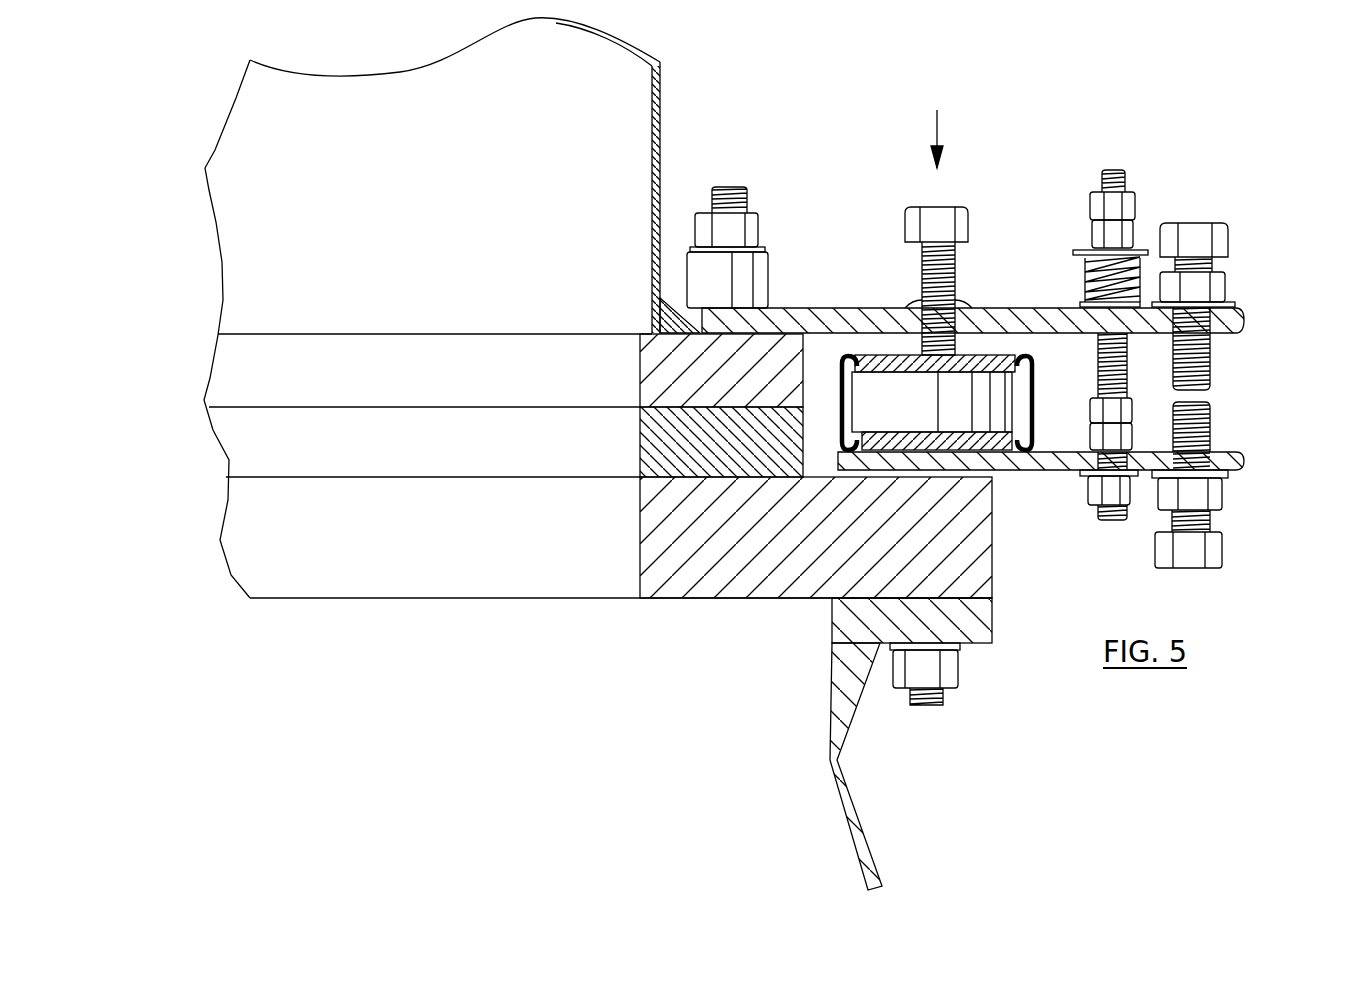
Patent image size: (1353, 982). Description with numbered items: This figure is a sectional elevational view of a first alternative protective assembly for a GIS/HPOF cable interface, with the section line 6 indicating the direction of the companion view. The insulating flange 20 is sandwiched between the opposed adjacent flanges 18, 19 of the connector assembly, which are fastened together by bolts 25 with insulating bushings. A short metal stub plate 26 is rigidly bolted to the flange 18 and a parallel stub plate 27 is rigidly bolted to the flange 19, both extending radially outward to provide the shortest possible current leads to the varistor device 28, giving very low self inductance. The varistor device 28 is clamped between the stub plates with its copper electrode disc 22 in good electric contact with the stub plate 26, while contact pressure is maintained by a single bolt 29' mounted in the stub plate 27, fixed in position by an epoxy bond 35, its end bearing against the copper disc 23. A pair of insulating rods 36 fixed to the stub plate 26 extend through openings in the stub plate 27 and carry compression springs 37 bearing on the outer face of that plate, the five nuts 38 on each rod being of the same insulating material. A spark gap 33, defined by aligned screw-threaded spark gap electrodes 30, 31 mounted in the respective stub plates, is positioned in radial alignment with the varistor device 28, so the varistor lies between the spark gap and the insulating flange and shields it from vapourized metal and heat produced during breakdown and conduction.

The section line 6 is at (938, 120).
The flange 18 is at (992, 553).
The flange 19 is at (640, 377).
The insulating flange 20 is at (640, 433).
The copper electrode disc 22 is at (952, 432).
The copper disc 23 is at (877, 373).
The bolt 25 is at (757, 223).
The stub plate 26 is at (1243, 462).
The stub plate 27 is at (1243, 323).
The varistor device 28 is at (1028, 410).
The bolt 29' is at (914, 258).
The spark gap electrode 30 is at (1225, 549).
The spark gap electrode 31 is at (1228, 238).
The spark gap 33 is at (1205, 393).
The epoxy bond 35 is at (912, 305).
The insulating rod 36 is at (1100, 178).
The compression spring 37 is at (1085, 270).
The nut 38 is at (1088, 207).